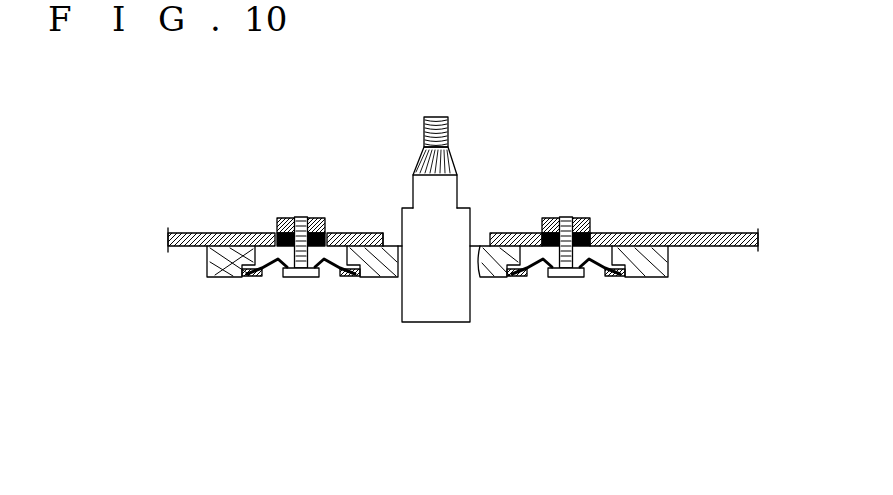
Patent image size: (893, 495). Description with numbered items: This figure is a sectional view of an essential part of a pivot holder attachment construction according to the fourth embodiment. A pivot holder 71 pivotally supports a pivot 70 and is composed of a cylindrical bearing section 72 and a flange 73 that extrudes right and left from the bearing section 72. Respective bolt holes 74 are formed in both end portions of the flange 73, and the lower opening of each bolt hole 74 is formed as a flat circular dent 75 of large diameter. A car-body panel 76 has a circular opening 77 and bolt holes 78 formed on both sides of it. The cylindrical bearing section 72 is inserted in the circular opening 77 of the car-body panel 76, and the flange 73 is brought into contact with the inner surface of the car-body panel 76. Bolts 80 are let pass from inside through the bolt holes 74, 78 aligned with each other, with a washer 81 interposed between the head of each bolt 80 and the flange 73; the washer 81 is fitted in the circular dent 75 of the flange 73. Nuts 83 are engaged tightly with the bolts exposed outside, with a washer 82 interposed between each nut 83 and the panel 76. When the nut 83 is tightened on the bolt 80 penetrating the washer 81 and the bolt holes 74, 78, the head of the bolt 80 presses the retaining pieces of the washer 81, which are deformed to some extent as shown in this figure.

The pivot 70 is at (412, 145).
The pivot holder 71 is at (396, 296).
The cylindrical bearing section 72 is at (472, 210).
The flange 73 is at (205, 265).
The bolt hole 74 is at (268, 255).
The flat circular dent 75 is at (250, 281).
The car-body panel 76 is at (245, 233).
The circular opening 77 is at (391, 231).
The bolt hole 78 is at (278, 232).
The bolt 80 is at (300, 277).
The washer 81 is at (347, 277).
The washer 82 is at (328, 230).
The nut 83 is at (287, 220).